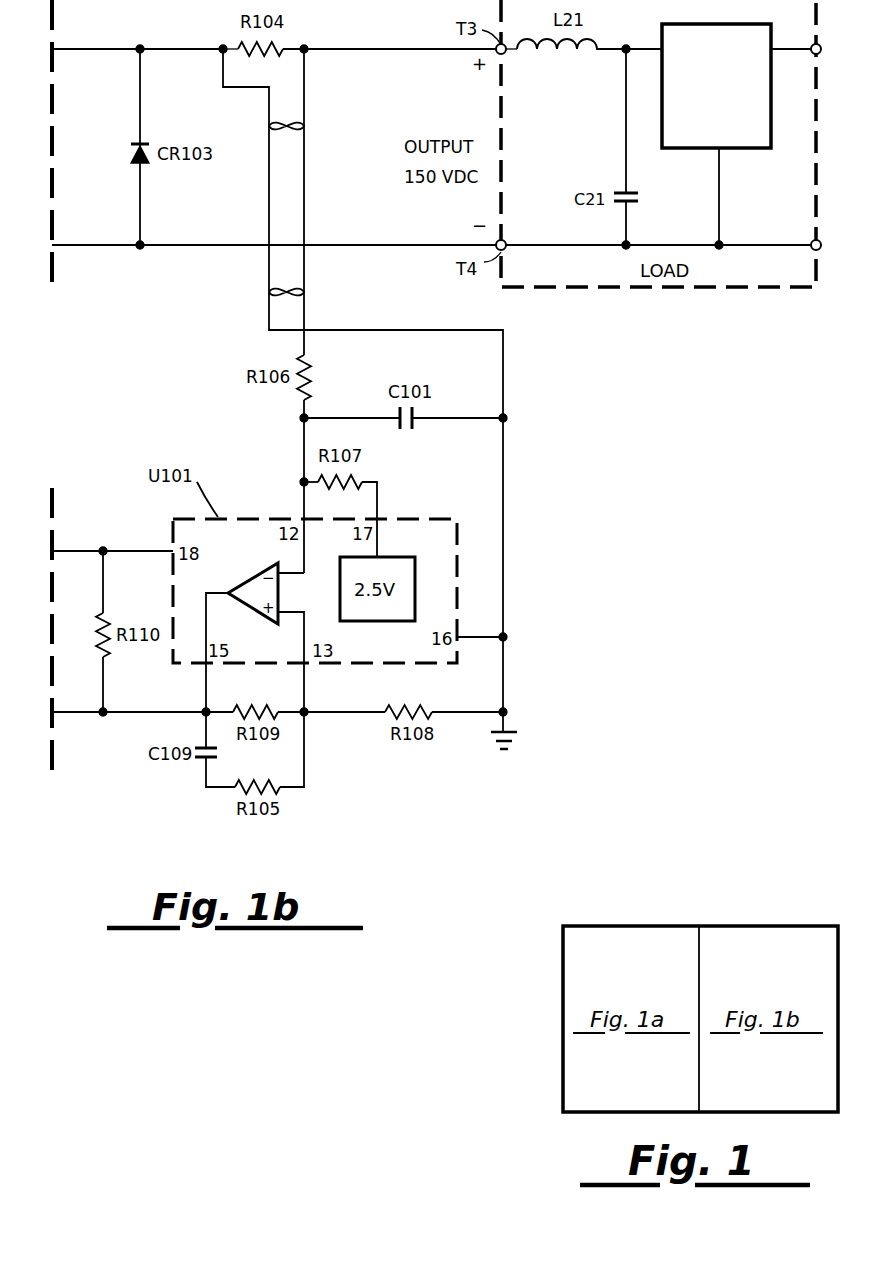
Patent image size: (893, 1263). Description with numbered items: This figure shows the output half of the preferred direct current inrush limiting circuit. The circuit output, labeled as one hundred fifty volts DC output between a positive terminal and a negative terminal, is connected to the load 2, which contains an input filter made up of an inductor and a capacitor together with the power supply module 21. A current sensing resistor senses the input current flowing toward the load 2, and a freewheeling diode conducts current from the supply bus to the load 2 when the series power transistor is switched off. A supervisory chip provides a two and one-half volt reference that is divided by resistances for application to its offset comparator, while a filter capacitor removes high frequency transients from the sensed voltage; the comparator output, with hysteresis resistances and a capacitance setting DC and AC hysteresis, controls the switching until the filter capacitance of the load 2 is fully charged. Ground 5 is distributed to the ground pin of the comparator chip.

The power supply module 21 is at (740, 150).
The load 2 is at (670, 288).
The ground 5 is at (517, 733).